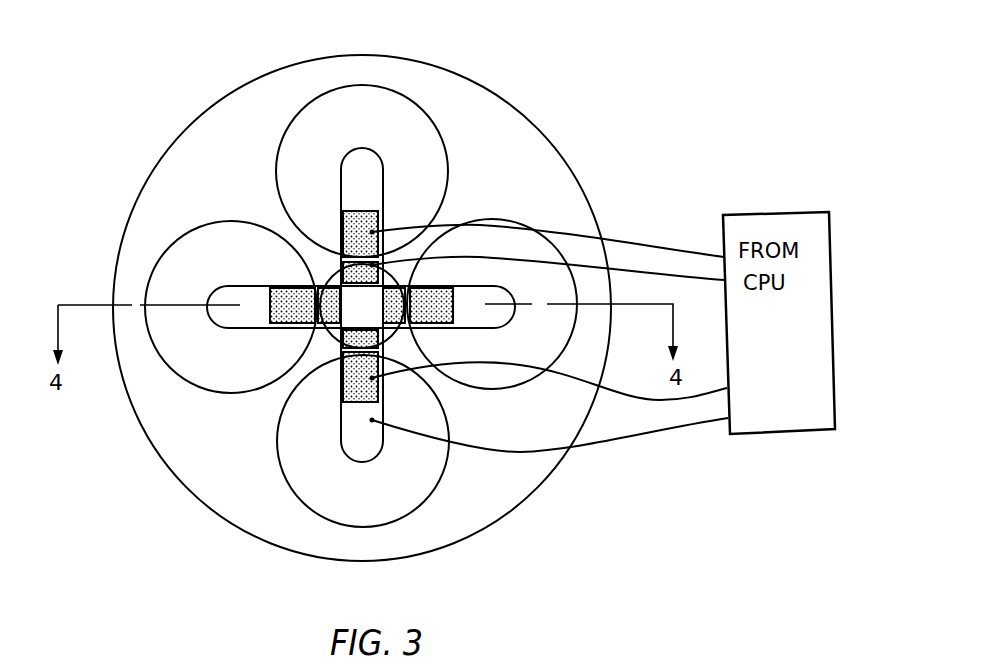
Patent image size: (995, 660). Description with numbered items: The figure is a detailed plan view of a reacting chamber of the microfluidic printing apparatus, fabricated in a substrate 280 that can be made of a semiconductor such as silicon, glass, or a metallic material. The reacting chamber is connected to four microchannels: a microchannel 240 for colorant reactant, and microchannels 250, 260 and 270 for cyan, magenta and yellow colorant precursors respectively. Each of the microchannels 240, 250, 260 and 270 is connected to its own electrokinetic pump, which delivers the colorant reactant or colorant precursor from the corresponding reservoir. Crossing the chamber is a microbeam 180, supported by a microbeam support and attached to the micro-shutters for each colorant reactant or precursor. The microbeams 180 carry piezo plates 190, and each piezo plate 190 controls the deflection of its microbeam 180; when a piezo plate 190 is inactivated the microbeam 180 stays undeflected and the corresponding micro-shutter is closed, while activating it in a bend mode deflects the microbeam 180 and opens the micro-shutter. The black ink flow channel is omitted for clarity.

The microbeam 180 is at (351, 165).
The piezo plate 190 is at (380, 216).
The microchannel for colorant reactant 240 is at (182, 261).
The microchannel for cyan colorant precursor 250 is at (433, 156).
The microchannel for magenta colorant precursor 260 is at (509, 372).
The microchannel for yellow colorant precursor 270 is at (432, 464).
The substrate 280 is at (498, 108).